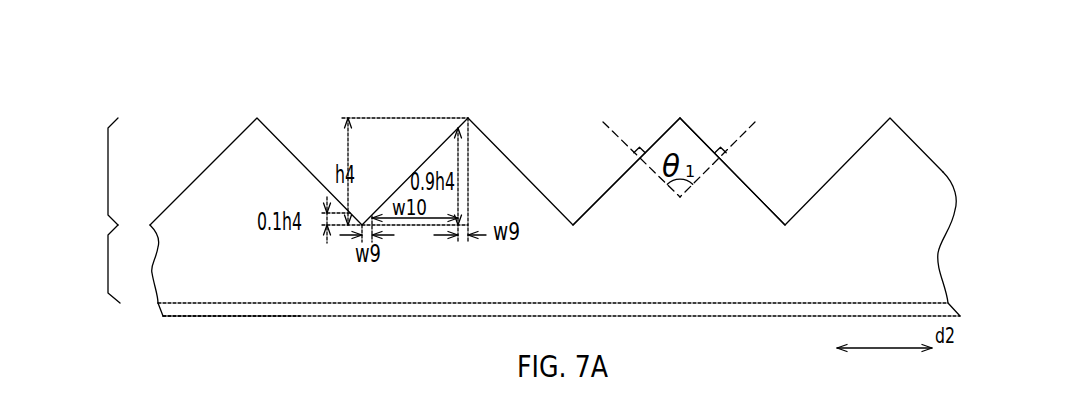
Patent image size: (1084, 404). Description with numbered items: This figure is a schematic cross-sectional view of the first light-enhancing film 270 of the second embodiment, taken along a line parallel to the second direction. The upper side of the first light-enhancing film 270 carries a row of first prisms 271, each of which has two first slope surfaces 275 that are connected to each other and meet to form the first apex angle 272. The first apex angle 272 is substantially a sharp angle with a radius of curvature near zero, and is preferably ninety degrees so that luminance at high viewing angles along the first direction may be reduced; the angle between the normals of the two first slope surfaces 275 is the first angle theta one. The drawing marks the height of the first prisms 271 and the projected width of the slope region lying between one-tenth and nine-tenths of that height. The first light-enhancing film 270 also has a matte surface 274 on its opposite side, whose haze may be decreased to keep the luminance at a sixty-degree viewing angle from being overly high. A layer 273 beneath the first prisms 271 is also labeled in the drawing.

The first light-enhancing film 270 is at (79, 68).
The first prisms 271 is at (91, 171).
The first apex angle 272 is at (468, 118).
The substrate layer 273 is at (92, 264).
The matte surface 274 is at (163, 312).
The first slope surfaces 275 is at (658, 138).